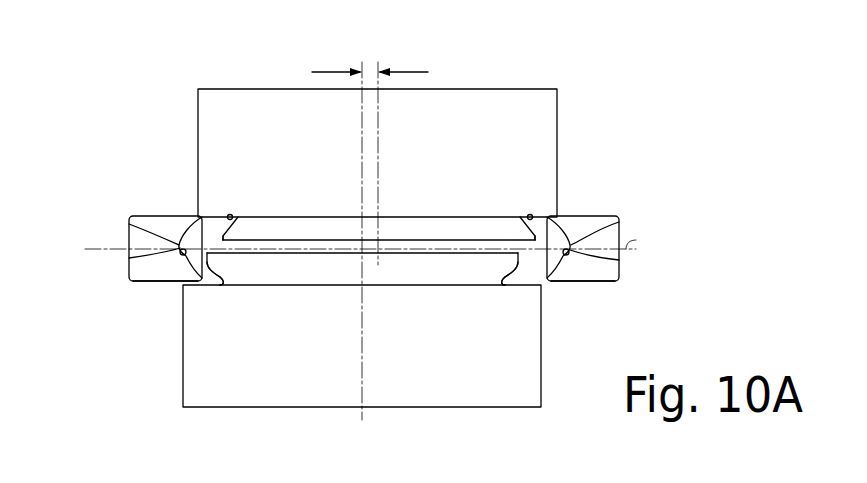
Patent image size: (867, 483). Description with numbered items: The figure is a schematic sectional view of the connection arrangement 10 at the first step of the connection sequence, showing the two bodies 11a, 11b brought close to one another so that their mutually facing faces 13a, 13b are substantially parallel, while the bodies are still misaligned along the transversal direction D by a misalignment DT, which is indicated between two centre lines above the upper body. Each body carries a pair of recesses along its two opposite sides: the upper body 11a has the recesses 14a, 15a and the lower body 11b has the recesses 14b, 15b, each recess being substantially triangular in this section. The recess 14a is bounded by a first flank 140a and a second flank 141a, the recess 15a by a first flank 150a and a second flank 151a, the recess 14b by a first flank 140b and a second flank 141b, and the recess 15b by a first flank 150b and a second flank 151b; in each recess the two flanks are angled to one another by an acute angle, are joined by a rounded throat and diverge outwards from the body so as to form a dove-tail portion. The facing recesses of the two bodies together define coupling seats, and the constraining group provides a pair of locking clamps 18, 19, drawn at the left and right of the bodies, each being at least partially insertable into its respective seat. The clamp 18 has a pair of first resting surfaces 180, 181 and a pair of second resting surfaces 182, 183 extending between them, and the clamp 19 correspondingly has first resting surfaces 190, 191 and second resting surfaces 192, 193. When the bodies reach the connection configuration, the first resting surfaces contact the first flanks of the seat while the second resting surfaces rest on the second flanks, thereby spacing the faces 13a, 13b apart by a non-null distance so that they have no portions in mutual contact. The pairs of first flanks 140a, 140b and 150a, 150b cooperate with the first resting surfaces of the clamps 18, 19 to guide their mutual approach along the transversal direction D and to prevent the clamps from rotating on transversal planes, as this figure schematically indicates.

The connection arrangement 10 is at (608, 80).
The body 11a is at (194, 84).
The body 11b is at (221, 414).
The face 13a is at (462, 250).
The face 13b is at (335, 255).
The recess 14a is at (208, 217).
The first flank 140a is at (231, 214).
The second flank 141a is at (223, 236).
The recess 15a is at (522, 218).
The first flank 150a is at (535, 214).
The second flank 151a is at (536, 236).
The recess 14b is at (208, 285).
The first flank 140b is at (213, 285).
The second flank 141b is at (224, 286).
The recess 15b is at (519, 282).
The first flank 150b is at (519, 282).
The second flank 151b is at (505, 288).
The locking clamp 18 is at (129, 280).
The first resting surface 180 is at (150, 217).
The first resting surface 181 is at (143, 282).
The second resting surface 182 is at (129, 224).
The second resting surface 183 is at (129, 258).
The locking clamp 19 is at (620, 280).
The first resting surface 190 is at (598, 217).
The first resting surface 191 is at (598, 282).
The second resting surface 192 is at (619, 222).
The second resting surface 193 is at (619, 260).
The misalignment DT is at (368, 71).
The transversal direction D is at (636, 240).